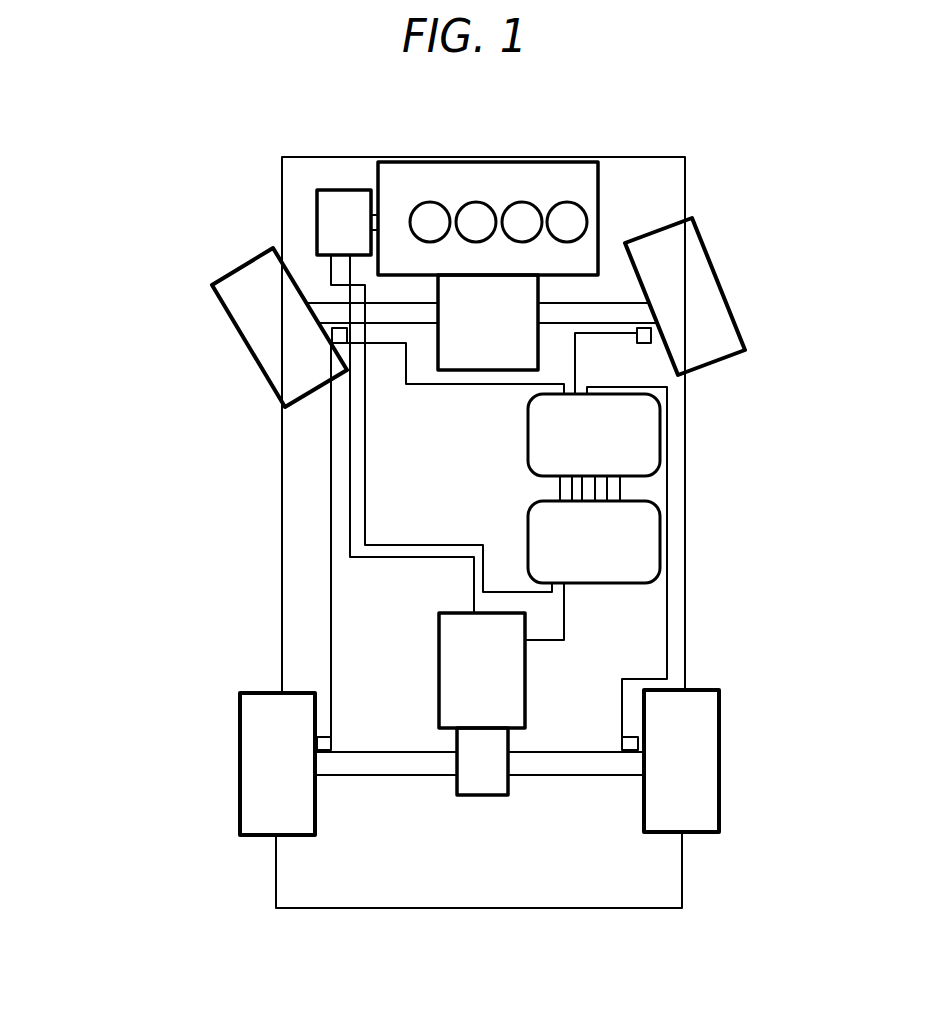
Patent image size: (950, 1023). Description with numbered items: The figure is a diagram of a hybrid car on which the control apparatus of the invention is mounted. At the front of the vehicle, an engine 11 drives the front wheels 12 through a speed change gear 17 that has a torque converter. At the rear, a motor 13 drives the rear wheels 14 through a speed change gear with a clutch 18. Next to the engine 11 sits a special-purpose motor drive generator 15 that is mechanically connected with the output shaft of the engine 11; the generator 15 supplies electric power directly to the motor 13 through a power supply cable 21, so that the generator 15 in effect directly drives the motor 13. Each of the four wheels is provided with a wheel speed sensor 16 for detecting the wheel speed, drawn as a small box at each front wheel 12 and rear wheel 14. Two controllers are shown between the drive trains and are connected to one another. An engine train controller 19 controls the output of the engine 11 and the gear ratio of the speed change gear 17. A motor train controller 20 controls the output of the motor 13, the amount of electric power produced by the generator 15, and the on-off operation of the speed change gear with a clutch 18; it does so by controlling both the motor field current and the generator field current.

The engine 11 is at (507, 172).
The front wheels 12 is at (252, 285).
The motor 13 is at (440, 648).
The rear wheels 14 is at (250, 782).
The generator 15 is at (322, 203).
The wheel speed sensor 16 is at (644, 342).
The speed change gear 17 is at (523, 302).
The speed change gear with a clutch 18 is at (478, 782).
The engine train controller 19 is at (650, 460).
The motor train controller 20 is at (650, 551).
The power supply cable 21 is at (352, 500).